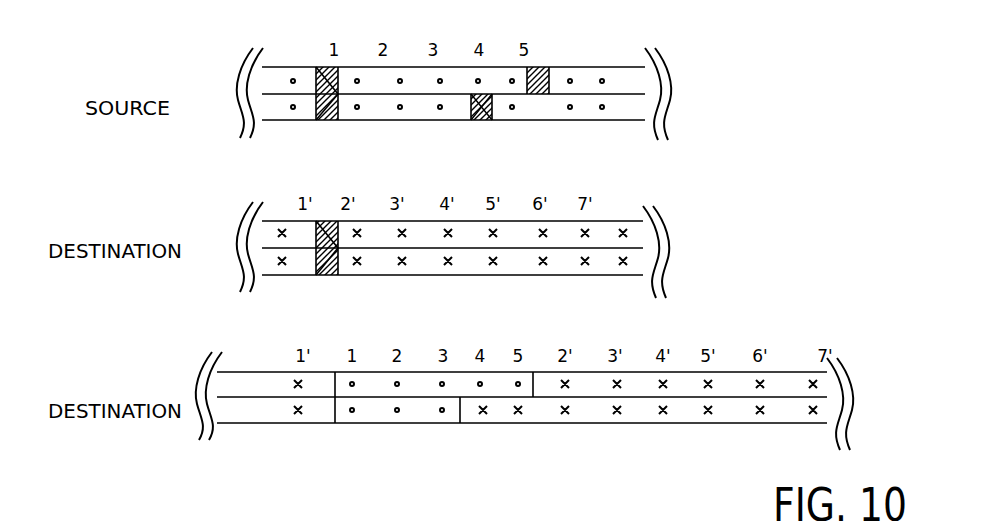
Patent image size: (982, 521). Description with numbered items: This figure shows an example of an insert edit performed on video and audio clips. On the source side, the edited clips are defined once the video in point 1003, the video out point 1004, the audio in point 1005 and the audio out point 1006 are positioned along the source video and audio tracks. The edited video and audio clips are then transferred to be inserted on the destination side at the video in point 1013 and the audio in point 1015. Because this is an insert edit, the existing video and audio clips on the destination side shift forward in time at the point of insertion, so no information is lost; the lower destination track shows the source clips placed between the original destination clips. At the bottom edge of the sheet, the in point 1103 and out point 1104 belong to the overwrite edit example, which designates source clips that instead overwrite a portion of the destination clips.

The video in point 1003 is at (330, 67).
The video out point 1004 is at (547, 67).
The audio in point 1005 is at (326, 120).
The audio out point 1006 is at (484, 120).
The video in point 1013 is at (330, 221).
The audio in point 1015 is at (326, 275).
The in point 1103 is at (327, 517).
The out point 1104 is at (550, 515).